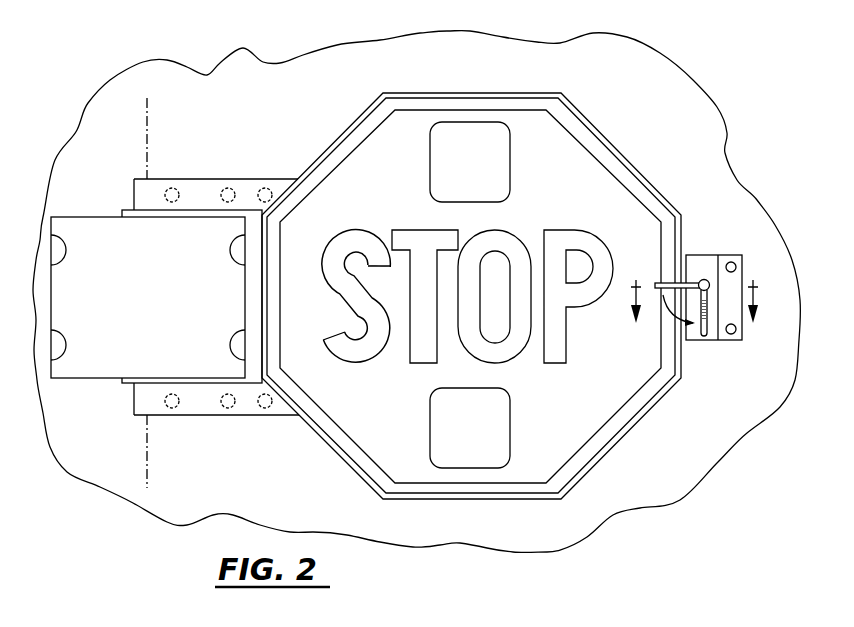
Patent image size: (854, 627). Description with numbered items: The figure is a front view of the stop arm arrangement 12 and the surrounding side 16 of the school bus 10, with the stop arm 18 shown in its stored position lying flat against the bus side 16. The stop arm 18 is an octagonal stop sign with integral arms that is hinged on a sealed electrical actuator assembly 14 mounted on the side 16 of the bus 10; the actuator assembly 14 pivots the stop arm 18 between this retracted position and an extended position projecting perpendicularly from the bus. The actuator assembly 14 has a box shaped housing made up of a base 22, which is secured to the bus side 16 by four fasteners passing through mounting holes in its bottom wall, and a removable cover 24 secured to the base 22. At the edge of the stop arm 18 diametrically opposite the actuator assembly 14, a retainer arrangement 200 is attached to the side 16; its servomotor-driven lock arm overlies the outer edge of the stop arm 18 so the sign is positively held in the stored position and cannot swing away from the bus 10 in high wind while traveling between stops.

The school bus 10 is at (415, 280).
The stop arm arrangement 12 is at (629, 153).
The actuator assembly 14 is at (84, 382).
The side 16 is at (705, 130).
The stop arm 18 is at (497, 91).
The base 22 is at (94, 213).
The removable cover 24 is at (78, 283).
The retainer arrangement 200 is at (720, 242).